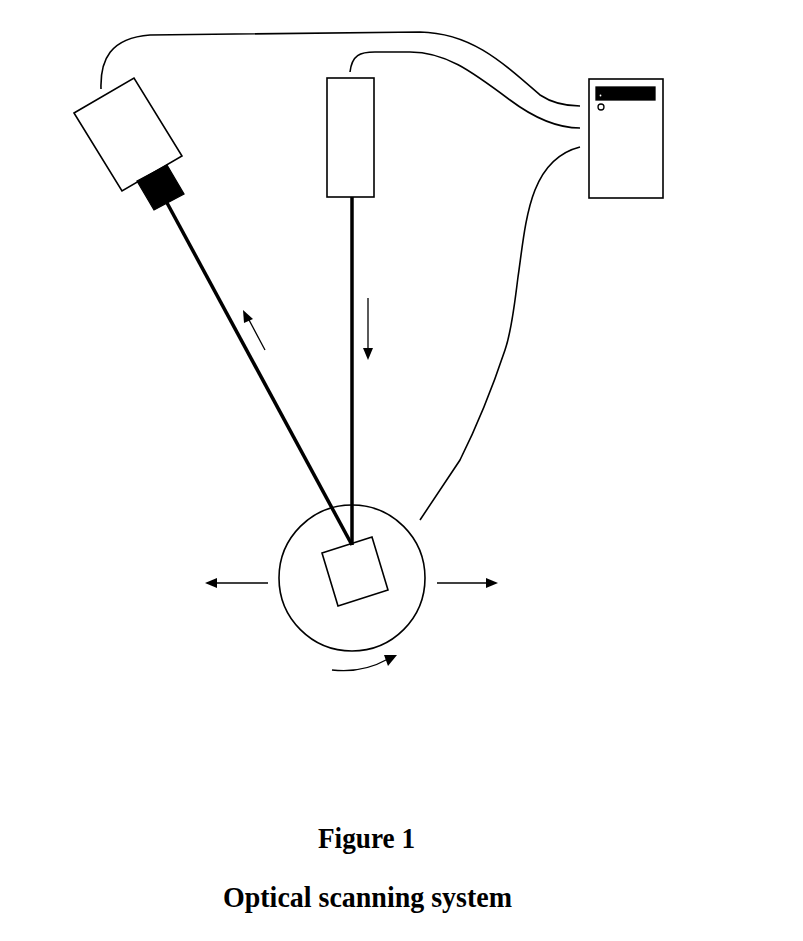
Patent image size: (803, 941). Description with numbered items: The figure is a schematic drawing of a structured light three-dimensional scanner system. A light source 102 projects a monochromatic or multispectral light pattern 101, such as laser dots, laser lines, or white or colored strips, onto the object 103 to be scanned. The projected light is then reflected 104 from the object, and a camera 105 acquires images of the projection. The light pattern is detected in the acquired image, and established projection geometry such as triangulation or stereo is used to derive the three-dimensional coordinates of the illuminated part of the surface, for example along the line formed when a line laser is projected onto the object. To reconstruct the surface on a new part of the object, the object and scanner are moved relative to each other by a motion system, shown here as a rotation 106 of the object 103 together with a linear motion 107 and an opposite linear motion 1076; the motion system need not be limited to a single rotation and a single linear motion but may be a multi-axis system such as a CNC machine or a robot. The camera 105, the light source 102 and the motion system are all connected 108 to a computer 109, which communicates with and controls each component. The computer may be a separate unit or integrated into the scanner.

The light pattern 101 is at (338, 371).
The light source 102 is at (326, 137).
The object 103 is at (352, 578).
The reflected light 104 is at (259, 373).
The camera 105 is at (101, 144).
The rotation 106 is at (364, 679).
The linear motion 107 is at (467, 569).
The opposite movement direction 1076 is at (236, 566).
The connection 108 is at (340, 276).
The computer 109 is at (626, 155).